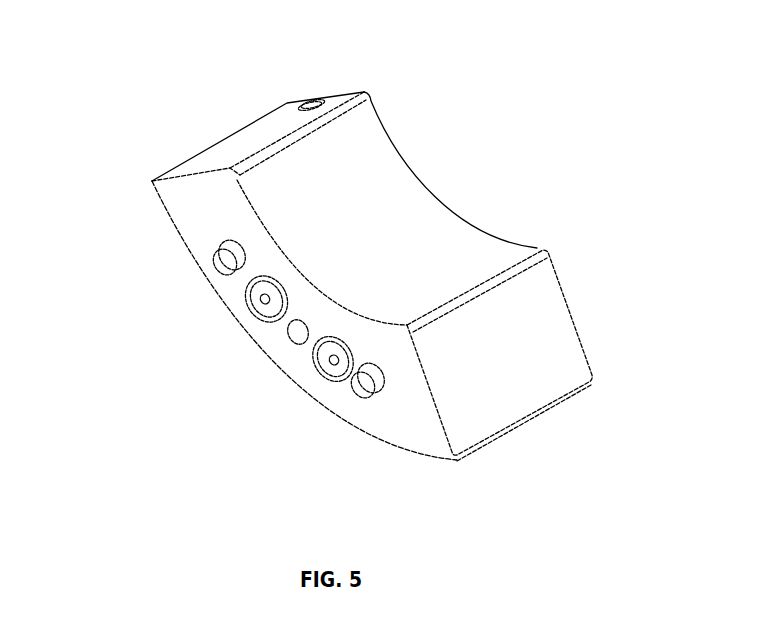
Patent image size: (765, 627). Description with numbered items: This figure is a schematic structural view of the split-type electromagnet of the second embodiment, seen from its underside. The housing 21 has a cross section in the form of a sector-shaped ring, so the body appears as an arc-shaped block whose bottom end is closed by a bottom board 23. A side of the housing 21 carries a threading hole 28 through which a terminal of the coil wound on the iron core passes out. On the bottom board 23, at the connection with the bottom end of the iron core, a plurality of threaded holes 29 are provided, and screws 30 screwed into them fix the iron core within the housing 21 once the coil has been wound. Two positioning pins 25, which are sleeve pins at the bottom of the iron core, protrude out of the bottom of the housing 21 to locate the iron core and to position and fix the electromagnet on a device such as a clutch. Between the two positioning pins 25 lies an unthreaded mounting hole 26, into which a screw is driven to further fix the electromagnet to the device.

The housing 21 is at (483, 408).
The bottom board 23 is at (168, 198).
The positioning pins 25 is at (223, 272).
The mounting hole 26 is at (297, 340).
The threading hole 28 is at (307, 100).
The threaded holes 29 is at (250, 303).
The screws 30 is at (268, 305).